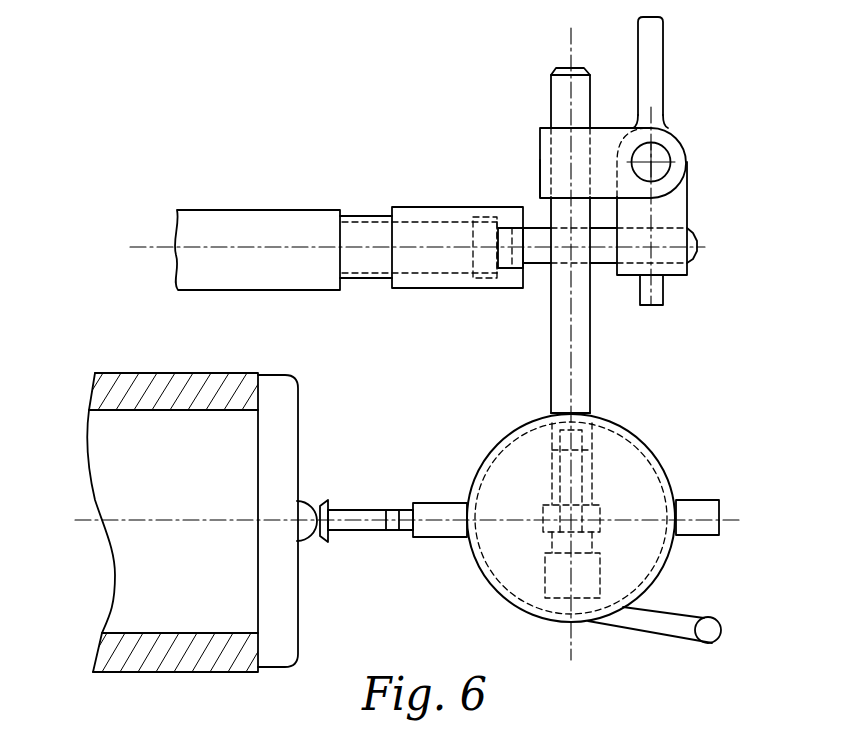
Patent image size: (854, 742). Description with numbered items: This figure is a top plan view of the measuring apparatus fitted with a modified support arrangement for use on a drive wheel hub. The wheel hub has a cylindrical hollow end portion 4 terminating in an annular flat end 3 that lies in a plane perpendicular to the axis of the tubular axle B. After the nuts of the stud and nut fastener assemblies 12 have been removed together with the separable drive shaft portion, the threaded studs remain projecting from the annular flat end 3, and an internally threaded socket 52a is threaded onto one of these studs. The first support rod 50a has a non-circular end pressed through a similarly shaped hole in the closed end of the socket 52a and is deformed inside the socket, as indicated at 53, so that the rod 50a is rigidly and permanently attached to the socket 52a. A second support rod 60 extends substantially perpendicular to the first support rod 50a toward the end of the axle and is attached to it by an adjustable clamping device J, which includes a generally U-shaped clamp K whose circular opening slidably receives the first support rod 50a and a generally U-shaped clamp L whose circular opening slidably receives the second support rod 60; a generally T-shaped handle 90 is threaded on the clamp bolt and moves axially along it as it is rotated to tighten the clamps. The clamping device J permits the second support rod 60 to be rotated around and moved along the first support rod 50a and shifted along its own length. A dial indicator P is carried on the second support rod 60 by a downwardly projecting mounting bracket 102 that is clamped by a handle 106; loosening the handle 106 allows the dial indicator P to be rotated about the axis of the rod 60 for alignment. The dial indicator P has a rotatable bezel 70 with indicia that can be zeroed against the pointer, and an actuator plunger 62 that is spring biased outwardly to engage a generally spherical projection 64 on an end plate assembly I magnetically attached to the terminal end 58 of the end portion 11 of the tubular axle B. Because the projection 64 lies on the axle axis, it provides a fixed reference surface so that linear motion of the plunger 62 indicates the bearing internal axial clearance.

The cylindrical hollow end portion 4 is at (313, 210).
The nut and stud threaded fastener assemblies 12 is at (363, 215).
The annular flat end 3 is at (342, 266).
The internally threaded socket 52a is at (462, 207).
The deformed end portion of rod 53 is at (507, 268).
The first support rod 50a is at (598, 258).
The second support rod 60 is at (562, 97).
The adjustable clamping device J is at (522, 140).
The U-shaped clamp L is at (524, 180).
The T-shaped handle 90 is at (655, 43).
The U-shaped clamp K is at (704, 280).
The end portion of tubular axle 11 is at (137, 672).
The tubular axle B is at (75, 490).
The terminal end 58 is at (260, 394).
The end plate assembly I is at (312, 461).
The spherical projection 64 is at (305, 532).
The actuator plunger 62 is at (363, 527).
The rotatable bezel 70 is at (612, 448).
The dial indicator P is at (685, 462).
The mounting bracket 102 is at (598, 522).
The handle 106 is at (660, 633).